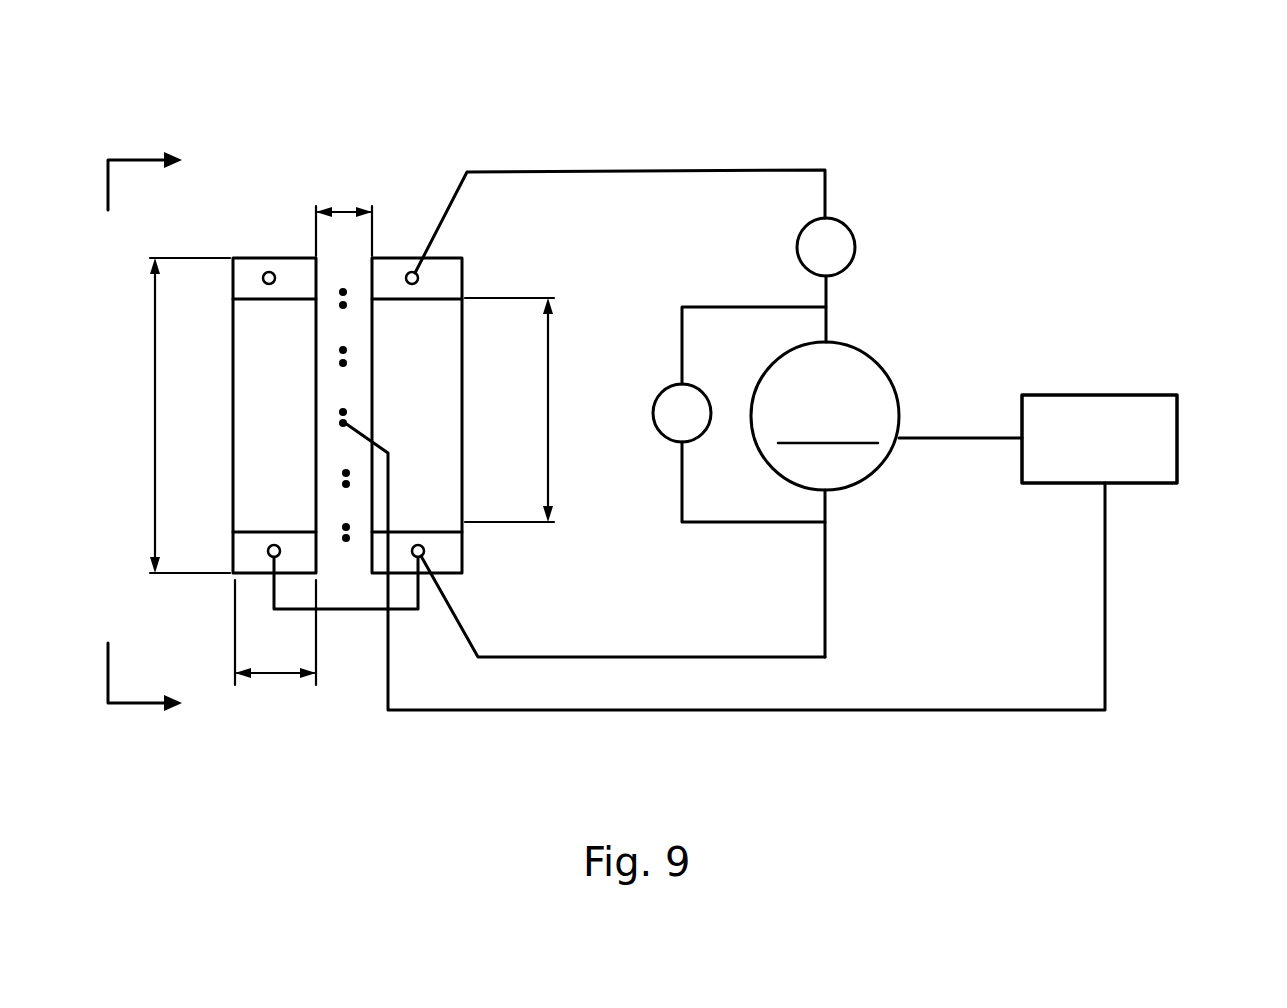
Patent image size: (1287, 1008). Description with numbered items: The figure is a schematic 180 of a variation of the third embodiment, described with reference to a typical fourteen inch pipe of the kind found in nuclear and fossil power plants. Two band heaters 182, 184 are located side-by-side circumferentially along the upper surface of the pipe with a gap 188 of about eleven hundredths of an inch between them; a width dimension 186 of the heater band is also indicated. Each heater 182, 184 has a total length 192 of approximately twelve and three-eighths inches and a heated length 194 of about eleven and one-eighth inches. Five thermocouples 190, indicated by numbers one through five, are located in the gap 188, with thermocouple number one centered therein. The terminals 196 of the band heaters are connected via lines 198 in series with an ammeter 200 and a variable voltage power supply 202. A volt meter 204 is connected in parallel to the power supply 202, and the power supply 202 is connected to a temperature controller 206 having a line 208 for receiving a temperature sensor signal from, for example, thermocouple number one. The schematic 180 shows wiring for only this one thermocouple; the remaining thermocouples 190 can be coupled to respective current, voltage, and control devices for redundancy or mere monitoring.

The schematic 180 is at (854, 116).
The band heater 182 is at (239, 389).
The band heater 184 is at (394, 252).
The plate width dimension 186 is at (276, 676).
The gap 188 is at (344, 210).
The thermocouples 190 is at (270, 400).
The total length 192 is at (154, 409).
The heated length 194 is at (549, 352).
The terminals 196 is at (272, 272).
The lines 198 is at (745, 170).
The ammeter 200 is at (855, 238).
The variable voltage power supply 202 is at (878, 346).
The volt meter 204 is at (668, 444).
The temperature controller 206 is at (1178, 436).
The line 208 is at (870, 710).